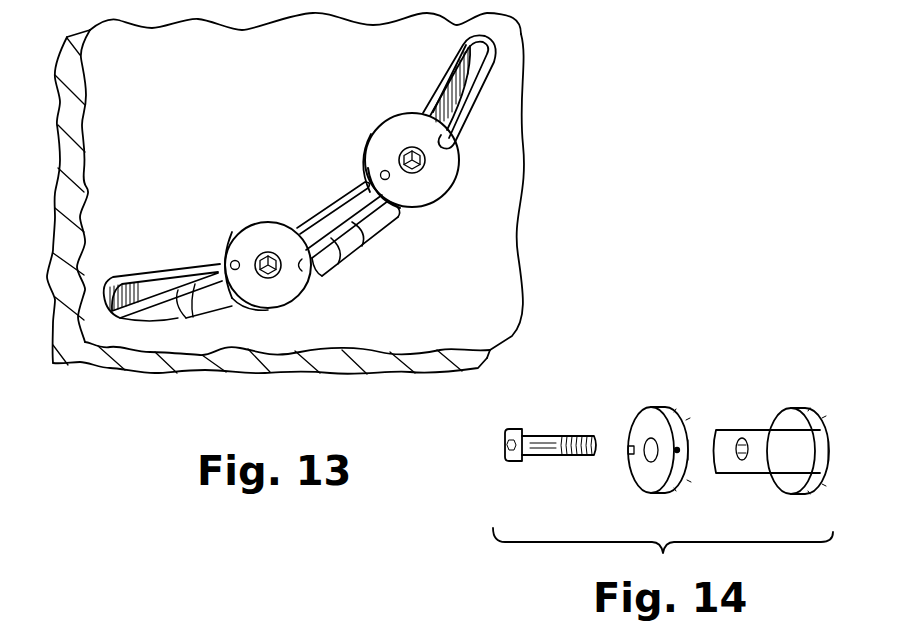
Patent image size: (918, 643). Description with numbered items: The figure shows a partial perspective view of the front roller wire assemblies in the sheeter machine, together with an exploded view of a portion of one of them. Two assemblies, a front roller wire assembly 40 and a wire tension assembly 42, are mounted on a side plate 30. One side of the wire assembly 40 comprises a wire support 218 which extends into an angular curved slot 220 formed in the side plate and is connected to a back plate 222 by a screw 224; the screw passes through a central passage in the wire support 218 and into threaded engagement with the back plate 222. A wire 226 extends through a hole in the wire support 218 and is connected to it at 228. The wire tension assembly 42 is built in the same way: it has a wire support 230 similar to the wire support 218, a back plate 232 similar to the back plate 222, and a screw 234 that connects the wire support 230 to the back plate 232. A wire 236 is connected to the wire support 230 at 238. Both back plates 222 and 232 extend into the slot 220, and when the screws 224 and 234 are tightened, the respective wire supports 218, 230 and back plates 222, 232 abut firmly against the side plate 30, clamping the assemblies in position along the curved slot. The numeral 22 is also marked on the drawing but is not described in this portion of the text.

In FIG. 13, the side plate 30 is at (258, 92).
In FIG. 13, the front roller wire assembly 40 is at (375, 110).
In FIG. 13, the wire tension assembly 42 is at (213, 200).
In FIG. 13, the loop handle 22 is at (462, 68).
In FIG. 13, the wire support 218 is at (385, 138).
In FIG. 14, the wire support 218 is at (647, 420).
In FIG. 13, the back plate 222 is at (330, 260).
In FIG. 14, the back plate 222 is at (780, 420).
In FIG. 13, the screw 224 is at (425, 162).
In FIG. 14, the screw 224 is at (552, 433).
In FIG. 13, the wire 226 is at (373, 225).
In FIG. 13, the wire connection point 228 is at (380, 172).
In FIG. 13, the wire support 230 is at (265, 232).
In FIG. 13, the back plate 232 is at (143, 318).
In FIG. 13, the screw 234 is at (275, 278).
In FIG. 13, the wire 236 is at (193, 298).
In FIG. 13, the wire connection point 238 is at (230, 250).
In FIG. 13, the angular curved slot 220 is at (152, 280).